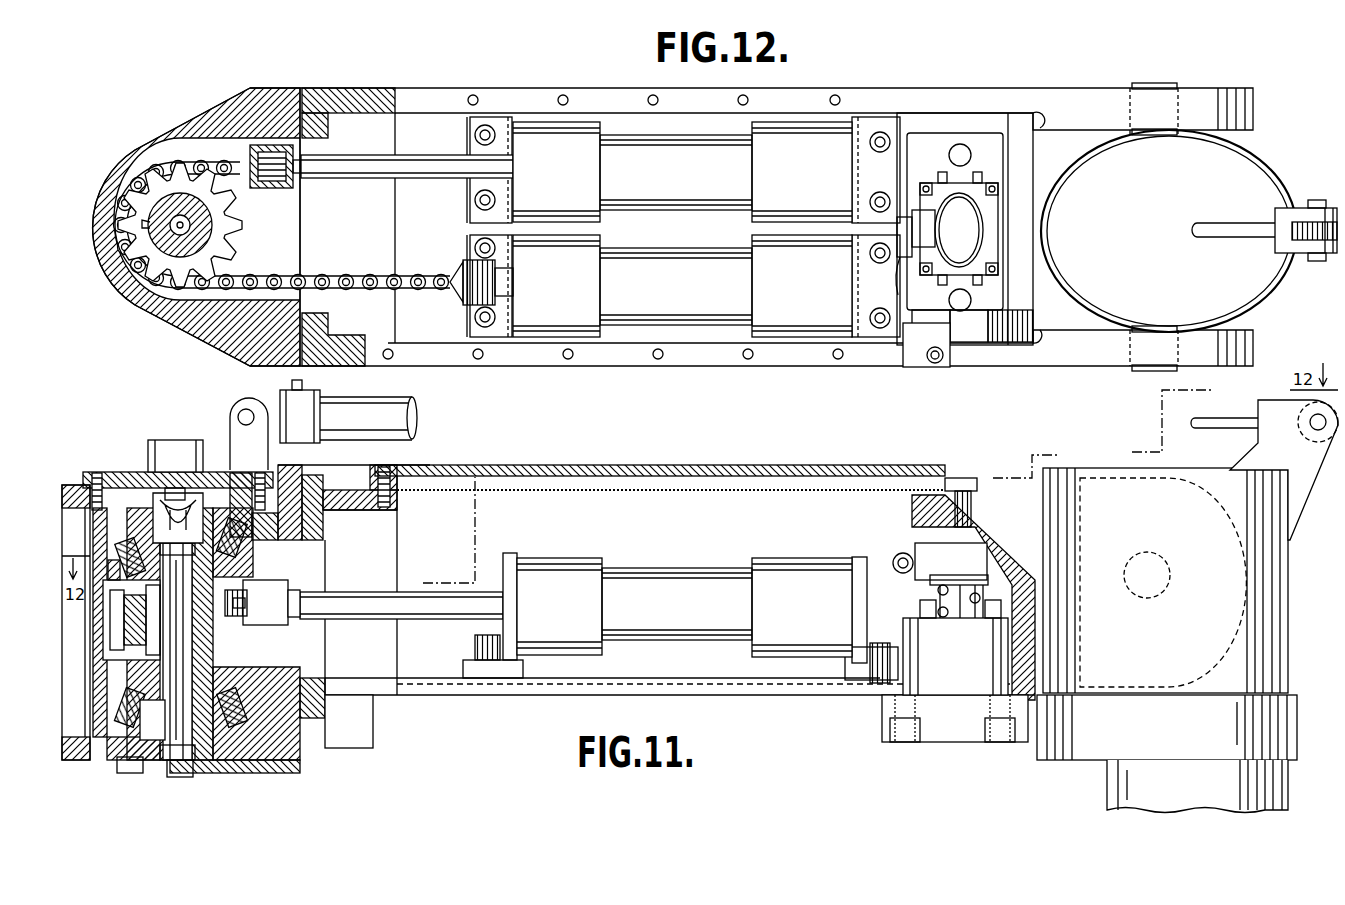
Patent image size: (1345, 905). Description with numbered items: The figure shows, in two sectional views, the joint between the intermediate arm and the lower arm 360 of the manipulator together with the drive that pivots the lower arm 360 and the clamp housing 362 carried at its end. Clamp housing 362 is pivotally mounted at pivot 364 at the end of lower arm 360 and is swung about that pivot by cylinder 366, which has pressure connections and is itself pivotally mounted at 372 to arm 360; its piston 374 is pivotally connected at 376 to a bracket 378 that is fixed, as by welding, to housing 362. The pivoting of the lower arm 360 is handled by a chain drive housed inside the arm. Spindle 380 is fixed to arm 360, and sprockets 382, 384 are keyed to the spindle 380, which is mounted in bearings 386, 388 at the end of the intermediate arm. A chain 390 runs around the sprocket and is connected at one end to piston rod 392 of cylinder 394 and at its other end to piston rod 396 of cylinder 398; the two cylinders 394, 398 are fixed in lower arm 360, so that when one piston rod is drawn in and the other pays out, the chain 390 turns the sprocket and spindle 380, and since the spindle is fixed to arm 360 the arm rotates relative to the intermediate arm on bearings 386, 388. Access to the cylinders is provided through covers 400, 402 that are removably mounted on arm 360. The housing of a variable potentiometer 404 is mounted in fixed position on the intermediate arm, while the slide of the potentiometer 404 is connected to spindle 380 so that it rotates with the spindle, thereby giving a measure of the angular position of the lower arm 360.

In FIG. 12, the lower arm 360 is at (871, 92).
In FIG. 11, the lower arm 360 is at (783, 696).
In FIG. 12, the clamp housing 362 is at (1258, 176).
In FIG. 11, the clamp housing 362 is at (1108, 495).
In FIG. 12, the pivot 364 is at (1153, 84).
In FIG. 11, the pivot 364 is at (1150, 553).
In FIG. 11, the cylinder 366 is at (405, 414).
In FIG. 11, the pivot mounting 372 is at (240, 412).
In FIG. 12, the piston 374 is at (1240, 238).
In FIG. 11, the piston 374 is at (1238, 429).
In FIG. 12, the pivot connection 376 is at (1318, 200).
In FIG. 11, the pivot connection 376 is at (1318, 432).
In FIG. 11, the bracket 378 is at (1295, 483).
In FIG. 12, the spindle 380 is at (200, 215).
In FIG. 11, the spindle 380 is at (205, 745).
In FIG. 12, the sprocket 382 is at (238, 244).
In FIG. 11, the sprocket 382 is at (262, 592).
In FIG. 11, the sprocket 384 is at (250, 618).
In FIG. 11, the bearing 386 is at (140, 720).
In FIG. 11, the bearing 388 is at (118, 565).
In FIG. 12, the chain 390 is at (135, 172).
In FIG. 12, the piston rod 392 is at (417, 160).
In FIG. 11, the piston rod 392 is at (358, 595).
In FIG. 12, the cylinder 394 is at (545, 130).
In FIG. 11, the cylinder 394 is at (700, 578).
In FIG. 12, the piston rod 396 is at (460, 263).
In FIG. 12, the cylinder 398 is at (700, 315).
In FIG. 11, the cover 400 is at (627, 489).
In FIG. 11, the cover 402 is at (820, 466).
In FIG. 11, the variable potentiometer 404 is at (165, 498).